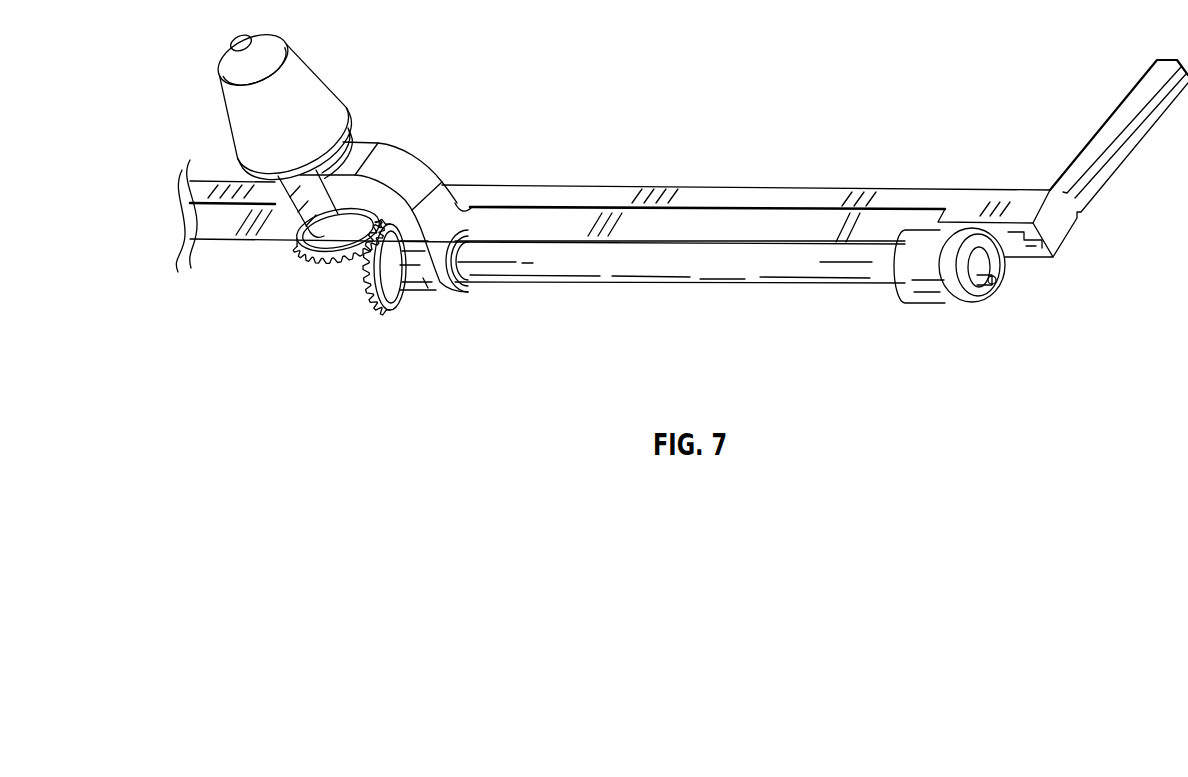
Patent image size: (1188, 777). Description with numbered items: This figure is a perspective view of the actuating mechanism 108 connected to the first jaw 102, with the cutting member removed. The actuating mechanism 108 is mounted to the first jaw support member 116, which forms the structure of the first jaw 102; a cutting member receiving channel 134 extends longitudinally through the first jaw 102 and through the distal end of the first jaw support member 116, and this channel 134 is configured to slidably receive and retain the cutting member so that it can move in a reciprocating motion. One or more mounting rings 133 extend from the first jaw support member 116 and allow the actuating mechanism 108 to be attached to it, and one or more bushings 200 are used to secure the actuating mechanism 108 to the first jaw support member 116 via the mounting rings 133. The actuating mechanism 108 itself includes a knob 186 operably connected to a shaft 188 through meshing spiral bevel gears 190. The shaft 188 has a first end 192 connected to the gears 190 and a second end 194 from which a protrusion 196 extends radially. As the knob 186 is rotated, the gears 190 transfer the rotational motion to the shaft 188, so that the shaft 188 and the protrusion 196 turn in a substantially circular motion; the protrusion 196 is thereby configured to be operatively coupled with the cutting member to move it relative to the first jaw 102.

The first jaw 102 is at (1150, 82).
The actuating mechanism 108 is at (665, 285).
The first jaw support member 116 is at (583, 184).
The mounting rings 133 is at (307, 205).
The cutting member receiving channel 134 is at (1008, 228).
The knob 186 is at (310, 72).
The shaft 188 is at (758, 287).
The spiral bevel gears 190 is at (345, 263).
The first end 192 is at (458, 286).
The second end 194 is at (980, 257).
The protrusion 196 is at (962, 323).
The bushings 200 is at (347, 147).